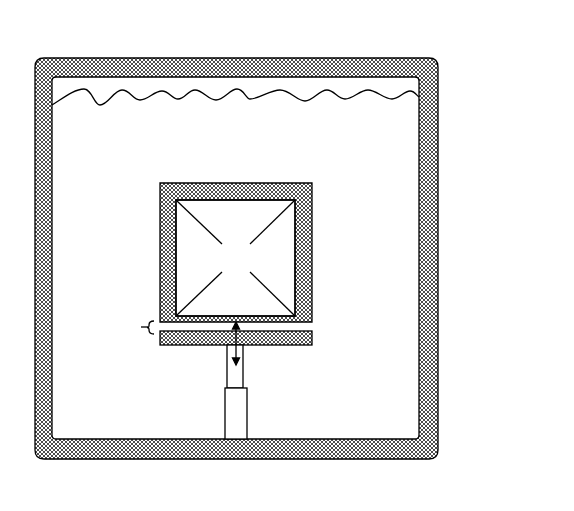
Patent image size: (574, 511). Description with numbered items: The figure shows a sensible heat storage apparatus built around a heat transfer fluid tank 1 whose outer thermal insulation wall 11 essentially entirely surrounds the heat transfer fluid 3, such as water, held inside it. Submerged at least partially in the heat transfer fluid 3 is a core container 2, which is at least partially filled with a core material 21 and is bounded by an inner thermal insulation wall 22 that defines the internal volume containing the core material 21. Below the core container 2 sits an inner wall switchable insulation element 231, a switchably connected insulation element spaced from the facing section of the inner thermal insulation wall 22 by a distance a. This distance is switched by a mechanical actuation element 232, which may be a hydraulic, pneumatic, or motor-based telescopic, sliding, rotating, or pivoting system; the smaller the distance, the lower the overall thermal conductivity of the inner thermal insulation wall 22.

The heat transfer fluid tank 1 is at (276, 247).
The outer thermal insulation wall 11 is at (276, 258).
The heat transfer fluid 3 is at (244, 137).
The core container 2 is at (320, 227).
The inner thermal insulation wall 22 is at (320, 252).
The core material 21 is at (248, 270).
The inner wall switchable insulation element 231 is at (327, 329).
The mechanical actuation element 232 is at (276, 392).